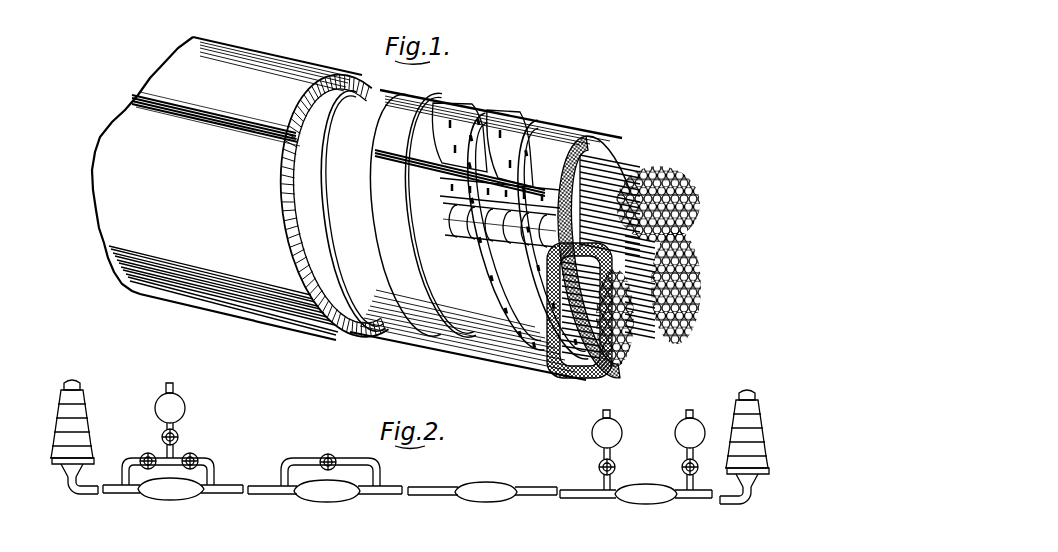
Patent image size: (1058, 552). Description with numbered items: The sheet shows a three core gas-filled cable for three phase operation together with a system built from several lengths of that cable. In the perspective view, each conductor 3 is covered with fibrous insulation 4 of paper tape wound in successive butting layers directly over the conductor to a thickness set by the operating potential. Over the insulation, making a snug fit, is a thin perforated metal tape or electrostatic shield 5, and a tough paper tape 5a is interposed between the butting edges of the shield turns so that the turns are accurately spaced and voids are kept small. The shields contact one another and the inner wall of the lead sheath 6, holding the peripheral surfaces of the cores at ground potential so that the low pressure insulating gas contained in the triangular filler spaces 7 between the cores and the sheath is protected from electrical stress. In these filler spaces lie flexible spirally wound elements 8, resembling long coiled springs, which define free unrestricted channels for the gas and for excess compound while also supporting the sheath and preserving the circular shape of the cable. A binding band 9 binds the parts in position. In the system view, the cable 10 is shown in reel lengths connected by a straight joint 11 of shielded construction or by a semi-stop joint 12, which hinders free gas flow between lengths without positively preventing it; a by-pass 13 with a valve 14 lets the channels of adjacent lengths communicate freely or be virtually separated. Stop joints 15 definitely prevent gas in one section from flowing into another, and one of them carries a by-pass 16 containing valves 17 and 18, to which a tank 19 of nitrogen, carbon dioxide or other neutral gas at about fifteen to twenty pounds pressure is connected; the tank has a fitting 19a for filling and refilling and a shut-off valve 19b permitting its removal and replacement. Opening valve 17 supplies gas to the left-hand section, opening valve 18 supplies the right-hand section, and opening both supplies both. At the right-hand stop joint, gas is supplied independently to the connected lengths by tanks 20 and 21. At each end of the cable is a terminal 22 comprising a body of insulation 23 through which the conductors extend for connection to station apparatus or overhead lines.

In FIG. 1, the conductor 3 is at (698, 268).
In FIG. 1, the fibrous insulation 4 is at (590, 370).
In FIG. 1, the electrostatic shield 5 is at (602, 134).
In FIG. 1, the paper tape 5a is at (466, 104).
In FIG. 1, the lead sheath 6 is at (311, 328).
In FIG. 1, the filler spaces 7 is at (457, 185).
In FIG. 1, the spirally wound elements 8 is at (450, 213).
In FIG. 1, the binding band 9 is at (368, 335).
In FIG. 2, the cable 10 is at (268, 492).
In FIG. 2, the straight joint 11 is at (492, 522).
In FIG. 2, the semi-stop joint 12 is at (357, 494).
In FIG. 2, the by-pass 13 is at (374, 467).
In FIG. 2, the valve 14 is at (332, 455).
In FIG. 2, the stop joint 15 is at (187, 495).
In FIG. 2, the by-pass 16 is at (215, 468).
In FIG. 2, the valve 17 is at (148, 453).
In FIG. 2, the valve 18 is at (196, 455).
In FIG. 2, the tank 19 is at (214, 409).
In FIG. 2, the fitting 19a is at (172, 383).
In FIG. 2, the shut-off valve 19b is at (178, 438).
In FIG. 2, the tank 20 is at (593, 434).
In FIG. 2, the tank 21 is at (676, 434).
In FIG. 2, the terminal 22 is at (82, 430).
In FIG. 2, the body of insulation 23 is at (80, 418).